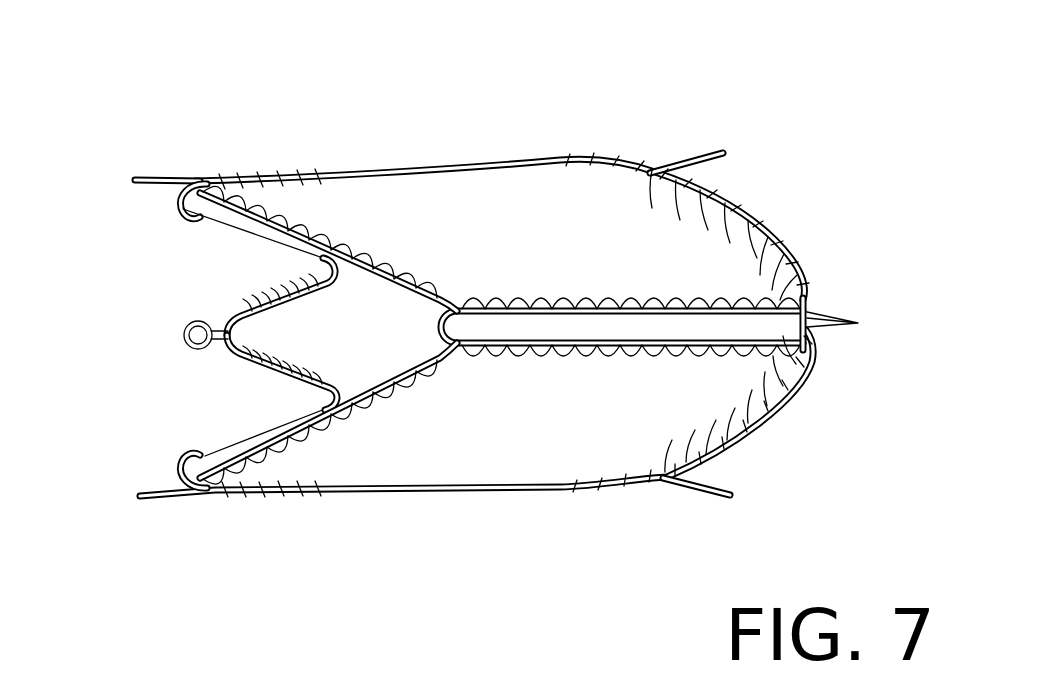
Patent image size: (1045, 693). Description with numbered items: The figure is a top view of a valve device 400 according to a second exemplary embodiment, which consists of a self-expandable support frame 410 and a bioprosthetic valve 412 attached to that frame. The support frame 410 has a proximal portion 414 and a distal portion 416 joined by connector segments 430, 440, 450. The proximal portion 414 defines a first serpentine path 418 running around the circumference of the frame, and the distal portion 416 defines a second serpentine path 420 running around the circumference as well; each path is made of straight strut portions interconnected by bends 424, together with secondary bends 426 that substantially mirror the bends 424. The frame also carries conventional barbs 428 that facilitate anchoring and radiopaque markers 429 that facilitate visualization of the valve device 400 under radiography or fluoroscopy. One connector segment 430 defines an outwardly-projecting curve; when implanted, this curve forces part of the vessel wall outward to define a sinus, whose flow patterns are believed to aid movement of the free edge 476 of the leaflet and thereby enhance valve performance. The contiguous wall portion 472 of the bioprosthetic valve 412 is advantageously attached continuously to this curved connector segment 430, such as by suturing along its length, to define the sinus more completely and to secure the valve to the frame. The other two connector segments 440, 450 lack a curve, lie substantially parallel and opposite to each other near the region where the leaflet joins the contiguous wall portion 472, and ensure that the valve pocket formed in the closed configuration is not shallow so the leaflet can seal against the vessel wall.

The valve device 400 is at (768, 162).
The support frame 410 is at (205, 180).
The bioprosthetic valve 412 is at (330, 210).
The proximal portion 414 is at (160, 383).
The distal portion 416 is at (834, 463).
The first serpentine path 418 is at (201, 404).
The second serpentine path 420 is at (766, 489).
The bends 424 is at (181, 206).
The secondary bends 426 is at (652, 170).
The barbs 428 is at (140, 178).
The radiopaque markers 429 is at (198, 320).
The connector segment 430 is at (528, 303).
The connector segment 440 is at (460, 490).
The connector segment 450 is at (440, 165).
The contiguous wall portion 472 is at (612, 428).
The free edge 476 is at (407, 427).